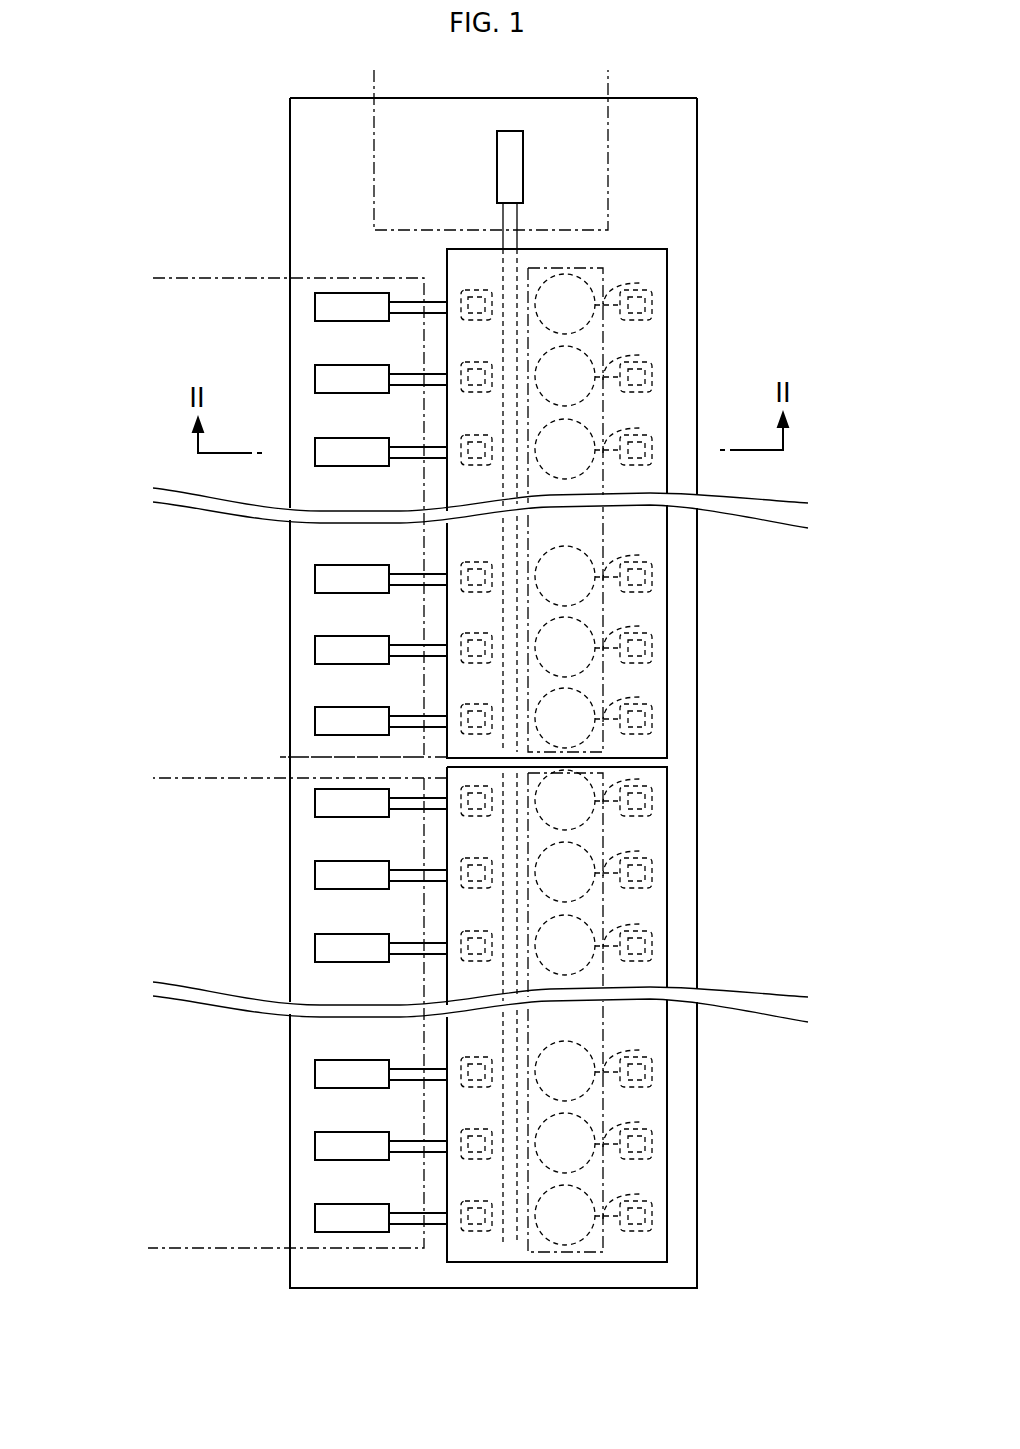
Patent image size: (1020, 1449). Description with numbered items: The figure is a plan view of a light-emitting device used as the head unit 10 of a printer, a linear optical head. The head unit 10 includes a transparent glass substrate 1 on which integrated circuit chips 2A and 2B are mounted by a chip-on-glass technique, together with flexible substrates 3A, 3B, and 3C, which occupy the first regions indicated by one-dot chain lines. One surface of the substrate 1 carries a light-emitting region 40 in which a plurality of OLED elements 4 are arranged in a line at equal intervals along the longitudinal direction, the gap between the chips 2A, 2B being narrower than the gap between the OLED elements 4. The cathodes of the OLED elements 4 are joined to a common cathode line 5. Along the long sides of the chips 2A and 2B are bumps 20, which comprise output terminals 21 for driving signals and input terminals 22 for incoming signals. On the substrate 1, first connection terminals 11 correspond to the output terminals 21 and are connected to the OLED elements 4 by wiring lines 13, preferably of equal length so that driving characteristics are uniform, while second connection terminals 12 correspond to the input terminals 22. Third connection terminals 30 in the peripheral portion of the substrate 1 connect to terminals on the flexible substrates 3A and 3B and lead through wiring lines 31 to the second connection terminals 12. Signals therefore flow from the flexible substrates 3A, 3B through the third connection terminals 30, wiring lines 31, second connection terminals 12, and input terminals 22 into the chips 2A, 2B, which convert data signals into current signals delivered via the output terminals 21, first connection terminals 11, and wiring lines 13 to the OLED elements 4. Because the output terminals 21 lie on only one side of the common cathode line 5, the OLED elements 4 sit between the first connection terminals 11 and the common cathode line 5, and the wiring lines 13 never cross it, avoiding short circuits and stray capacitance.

The substrate 1 is at (690, 750).
The integrated circuit chip 2A is at (650, 485).
The integrated circuit chip 2B is at (650, 1248).
The flexible substrate 3A is at (177, 277).
The flexible substrate 3B is at (173, 1253).
The flexible substrate 3C is at (367, 117).
The OLED element 4 is at (603, 333).
The common cathode line 5 is at (512, 215).
The head unit 10 is at (119, 143).
The first connection terminal 11 is at (646, 290).
The second connection terminal 12 is at (462, 290).
The wiring line 13 is at (585, 276).
The bump 20 is at (463, 590).
The output terminal 21 is at (655, 309).
The input terminal 22 is at (463, 318).
The third connection terminal 30 is at (327, 305).
The wiring line 31 is at (414, 314).
The light-emitting region 40 is at (563, 1253).